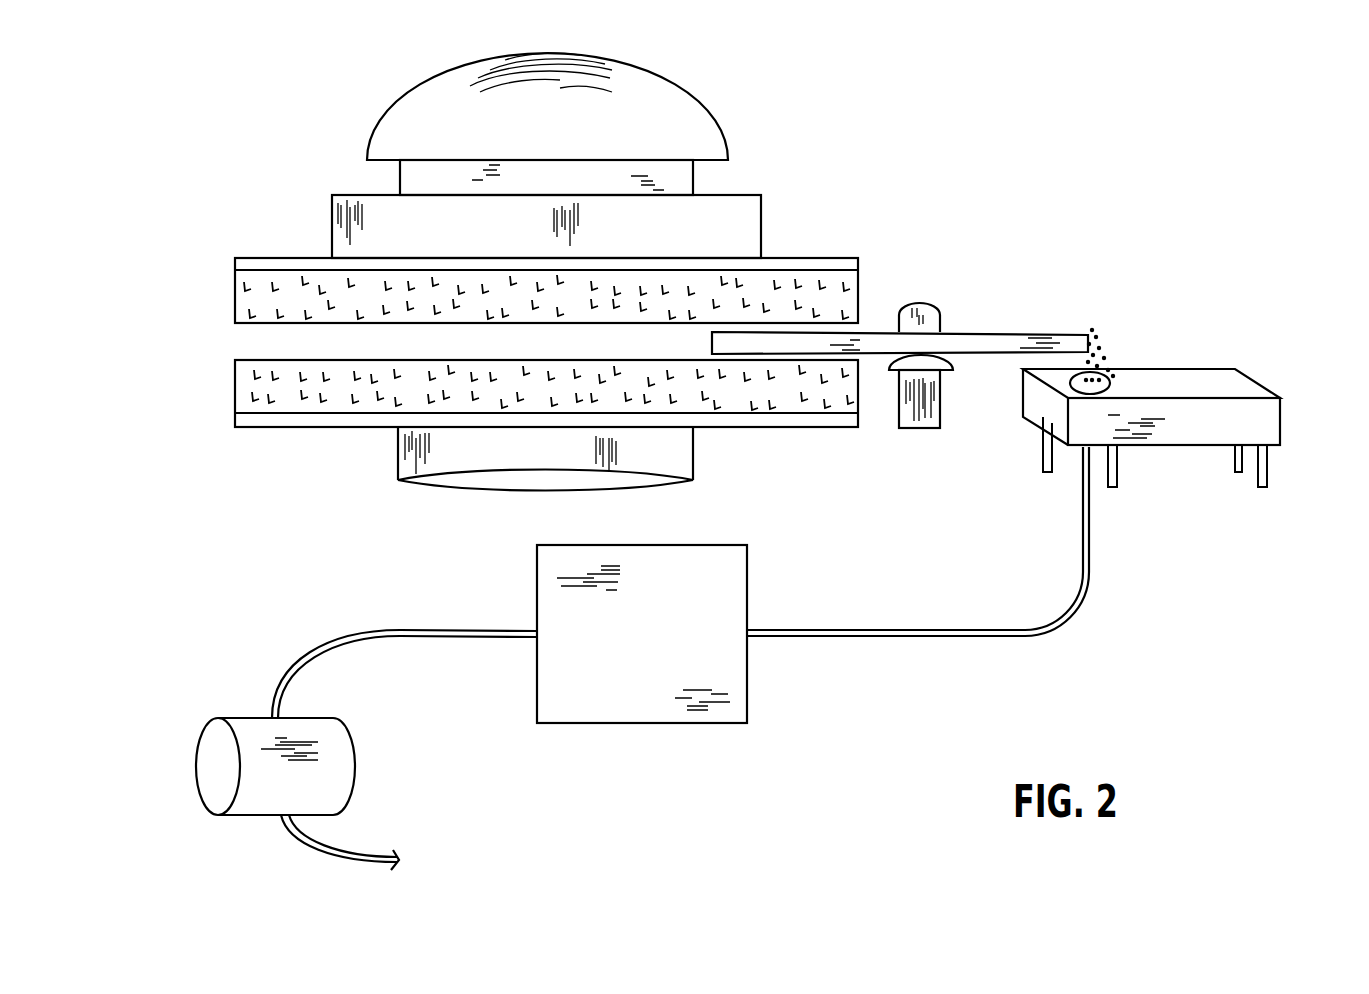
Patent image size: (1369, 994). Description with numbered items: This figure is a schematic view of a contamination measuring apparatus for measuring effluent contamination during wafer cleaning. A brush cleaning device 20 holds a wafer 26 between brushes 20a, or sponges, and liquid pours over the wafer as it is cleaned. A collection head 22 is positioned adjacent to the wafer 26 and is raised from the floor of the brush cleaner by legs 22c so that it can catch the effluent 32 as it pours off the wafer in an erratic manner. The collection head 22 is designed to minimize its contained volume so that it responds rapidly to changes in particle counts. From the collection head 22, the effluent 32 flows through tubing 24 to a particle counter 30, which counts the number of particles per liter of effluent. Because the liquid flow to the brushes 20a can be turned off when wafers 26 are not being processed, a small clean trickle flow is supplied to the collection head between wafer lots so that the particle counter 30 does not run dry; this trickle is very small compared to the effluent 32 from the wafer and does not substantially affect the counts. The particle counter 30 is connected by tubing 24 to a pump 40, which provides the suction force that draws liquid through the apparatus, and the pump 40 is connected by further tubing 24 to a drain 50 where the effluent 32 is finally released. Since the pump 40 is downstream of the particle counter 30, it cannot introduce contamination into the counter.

The brush cleaning device 20 is at (842, 178).
The brushes 20a is at (235, 300).
The collection head 22 is at (1280, 422).
The legs 22c is at (1268, 469).
The tubing 24 is at (1089, 540).
The wafer 26 is at (1003, 332).
The particle counter 30 is at (640, 723).
The effluent 32 is at (1100, 343).
The pump 40 is at (323, 713).
The drain 50 is at (400, 860).